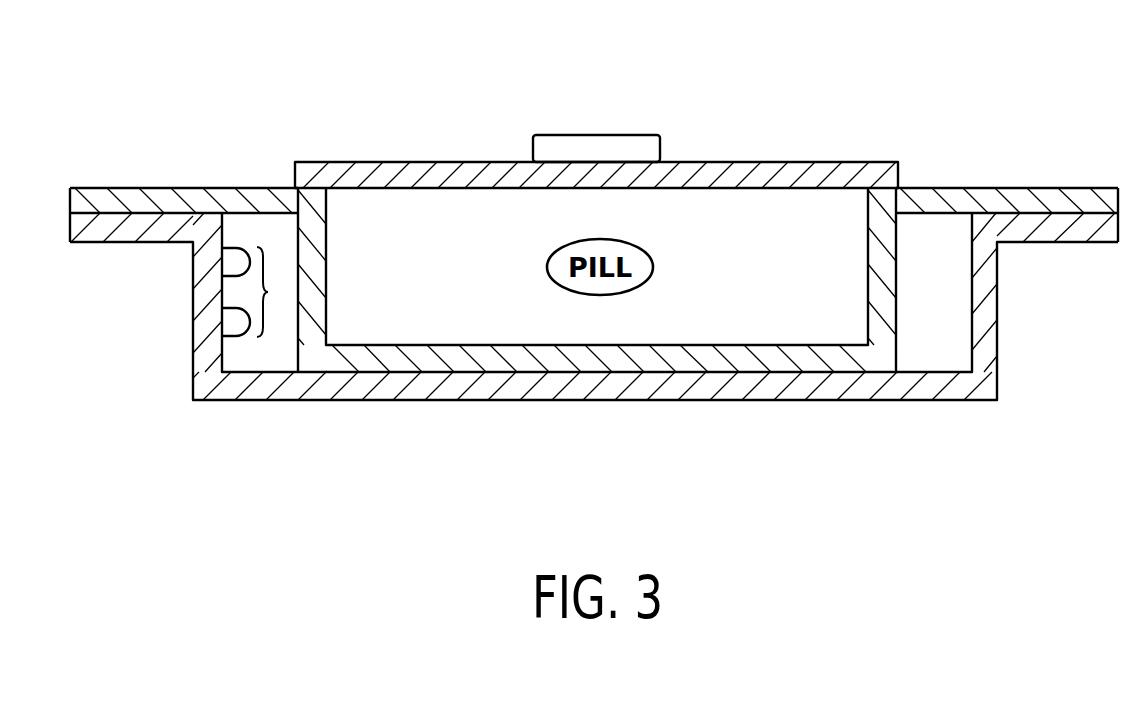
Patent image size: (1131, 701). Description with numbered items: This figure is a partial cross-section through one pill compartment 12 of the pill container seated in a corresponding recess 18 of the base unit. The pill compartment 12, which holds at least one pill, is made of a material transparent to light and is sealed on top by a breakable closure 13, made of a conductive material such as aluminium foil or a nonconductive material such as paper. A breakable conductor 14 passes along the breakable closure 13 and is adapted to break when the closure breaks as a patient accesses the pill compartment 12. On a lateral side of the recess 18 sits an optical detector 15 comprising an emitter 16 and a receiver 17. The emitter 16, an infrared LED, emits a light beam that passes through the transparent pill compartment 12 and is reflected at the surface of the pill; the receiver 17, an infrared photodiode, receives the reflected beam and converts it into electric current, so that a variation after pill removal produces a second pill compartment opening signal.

The pill compartment 12 is at (922, 263).
The breakable closure 13 is at (392, 162).
The breakable conductor 14 is at (590, 135).
The optical detector 15 is at (278, 292).
The emitter 16 is at (240, 248).
The receiver 17 is at (237, 336).
The recess 18 is at (957, 359).